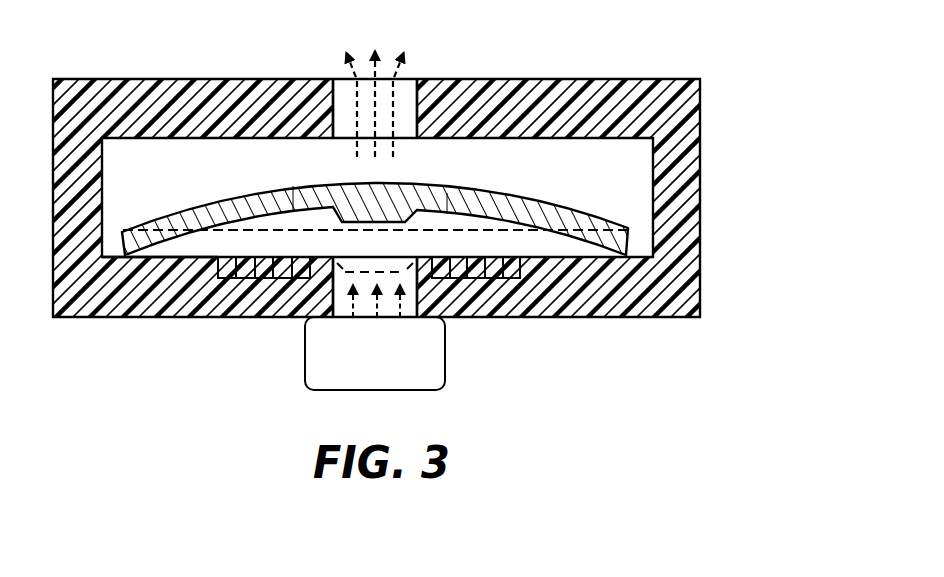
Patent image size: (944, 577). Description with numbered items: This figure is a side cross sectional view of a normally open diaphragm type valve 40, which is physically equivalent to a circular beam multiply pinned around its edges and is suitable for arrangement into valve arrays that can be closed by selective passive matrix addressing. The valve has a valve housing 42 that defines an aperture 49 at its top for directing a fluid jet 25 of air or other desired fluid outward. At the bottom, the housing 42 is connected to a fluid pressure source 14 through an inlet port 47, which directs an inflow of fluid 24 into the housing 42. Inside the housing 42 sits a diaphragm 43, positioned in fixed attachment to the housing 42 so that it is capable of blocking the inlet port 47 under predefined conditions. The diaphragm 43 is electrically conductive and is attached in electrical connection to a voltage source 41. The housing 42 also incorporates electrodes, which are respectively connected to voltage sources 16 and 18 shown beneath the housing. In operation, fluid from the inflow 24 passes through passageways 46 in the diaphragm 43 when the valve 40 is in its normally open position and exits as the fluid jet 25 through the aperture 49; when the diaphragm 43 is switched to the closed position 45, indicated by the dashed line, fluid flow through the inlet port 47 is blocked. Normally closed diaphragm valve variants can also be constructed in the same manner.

The diaphragm type valve 40 is at (648, 41).
The valve housing 42 is at (700, 133).
The diaphragm 43 is at (538, 203).
The closed position 45 is at (553, 232).
The passageways 46 is at (447, 193).
The aperture 49 is at (417, 108).
The fluid jet 25 is at (356, 90).
The voltage source 16 is at (228, 278).
The voltage source 18 is at (469, 278).
The voltage source 41 is at (127, 258).
The fluid pressure source 14 is at (390, 361).
The inflow of fluid 24 is at (353, 293).
The inlet port 47 is at (407, 292).